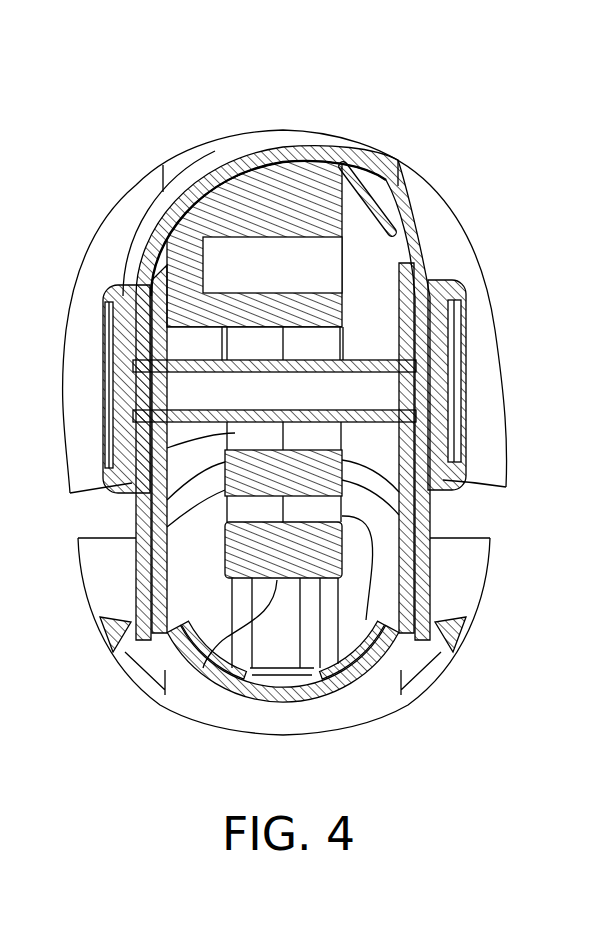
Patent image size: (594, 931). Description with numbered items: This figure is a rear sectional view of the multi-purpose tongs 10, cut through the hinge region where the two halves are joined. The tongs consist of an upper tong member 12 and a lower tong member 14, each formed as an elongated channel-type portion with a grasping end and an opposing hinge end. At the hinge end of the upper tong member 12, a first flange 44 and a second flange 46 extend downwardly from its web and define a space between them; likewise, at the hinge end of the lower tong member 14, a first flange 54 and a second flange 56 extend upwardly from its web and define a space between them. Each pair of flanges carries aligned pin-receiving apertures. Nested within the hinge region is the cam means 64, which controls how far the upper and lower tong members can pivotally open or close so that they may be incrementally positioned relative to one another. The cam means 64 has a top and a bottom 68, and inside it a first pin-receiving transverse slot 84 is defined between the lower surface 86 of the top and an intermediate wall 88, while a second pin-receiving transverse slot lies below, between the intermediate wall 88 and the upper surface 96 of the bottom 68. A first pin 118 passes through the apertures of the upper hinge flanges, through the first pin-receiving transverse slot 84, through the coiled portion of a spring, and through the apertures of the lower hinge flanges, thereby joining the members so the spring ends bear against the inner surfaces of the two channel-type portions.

The multi-purpose tongs 10 is at (376, 110).
The upper tong member 12 is at (216, 190).
The lower tong member 14 is at (260, 700).
The first flange 44 is at (457, 512).
The second flange 46 is at (103, 508).
The first flange 54 is at (135, 542).
The second flange 56 is at (440, 568).
The cam means 64 is at (163, 160).
The bottom 68 is at (218, 655).
The first pin-receiving transverse slot 84 is at (343, 340).
The lower surface 86 is at (142, 296).
The intermediate wall 88 is at (142, 432).
The upper surface 96 is at (367, 655).
The first pin 118 is at (455, 470).